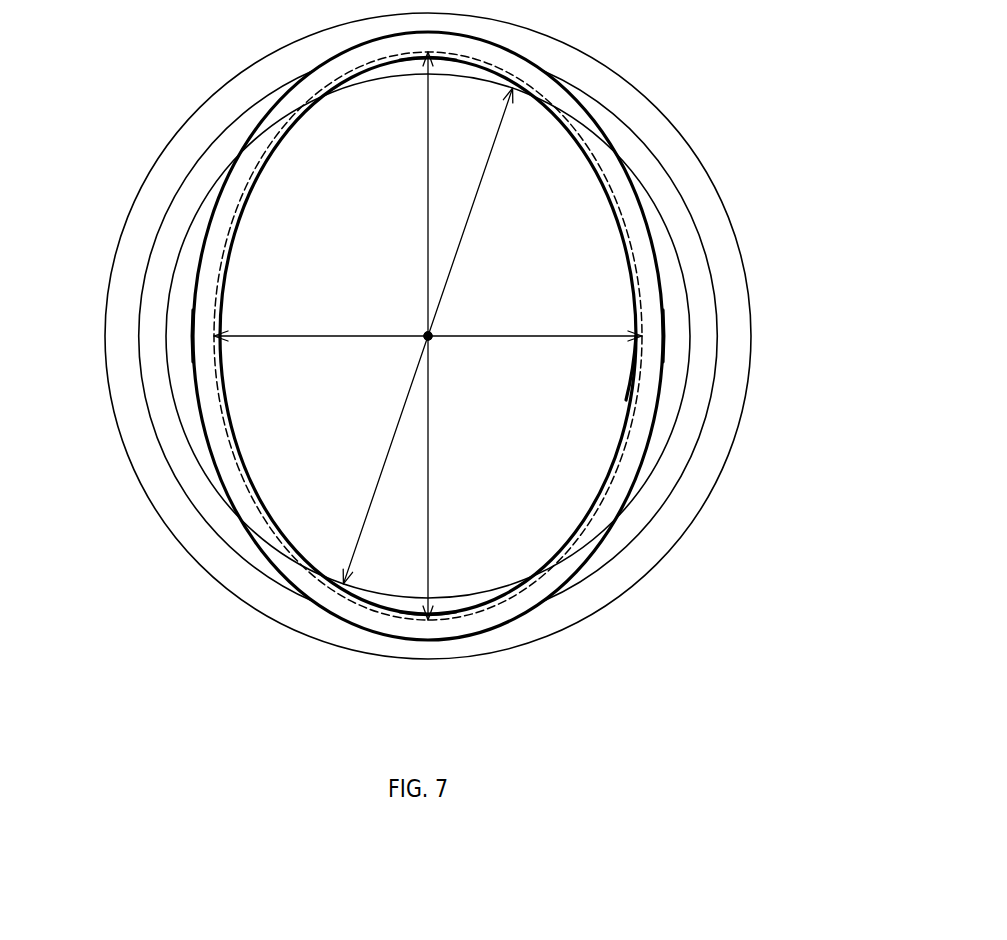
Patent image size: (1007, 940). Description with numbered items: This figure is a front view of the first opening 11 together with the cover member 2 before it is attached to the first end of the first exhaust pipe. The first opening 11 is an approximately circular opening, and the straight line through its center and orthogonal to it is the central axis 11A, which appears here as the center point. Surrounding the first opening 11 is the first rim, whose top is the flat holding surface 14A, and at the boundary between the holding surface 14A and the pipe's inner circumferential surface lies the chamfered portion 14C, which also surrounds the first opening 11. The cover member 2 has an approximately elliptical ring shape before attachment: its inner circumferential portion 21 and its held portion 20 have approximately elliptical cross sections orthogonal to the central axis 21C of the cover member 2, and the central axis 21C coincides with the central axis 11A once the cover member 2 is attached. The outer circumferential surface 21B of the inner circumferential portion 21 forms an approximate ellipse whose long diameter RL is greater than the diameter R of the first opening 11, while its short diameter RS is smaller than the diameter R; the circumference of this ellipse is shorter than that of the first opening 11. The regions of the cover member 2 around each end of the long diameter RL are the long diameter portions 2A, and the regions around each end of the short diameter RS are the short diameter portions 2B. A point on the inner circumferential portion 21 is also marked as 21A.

The cover member 2 is at (770, 55).
The long diameter portion 2A is at (413, 67).
The short diameter portion 2B is at (182, 363).
The first opening 11 is at (187, 228).
The central axis 11A is at (430, 338).
The holding surface 14A is at (725, 265).
The chamfered portion 14C is at (673, 223).
The held portion 20 is at (605, 157).
The inner circumferential portion 21 is at (607, 185).
The elliptical edge portion 21A is at (632, 380).
The outer circumferential surface 21B is at (633, 417).
The central axis 21C is at (430, 338).
The diameter R is at (397, 425).
The long diameter RL is at (427, 209).
The short diameter RS is at (345, 334).